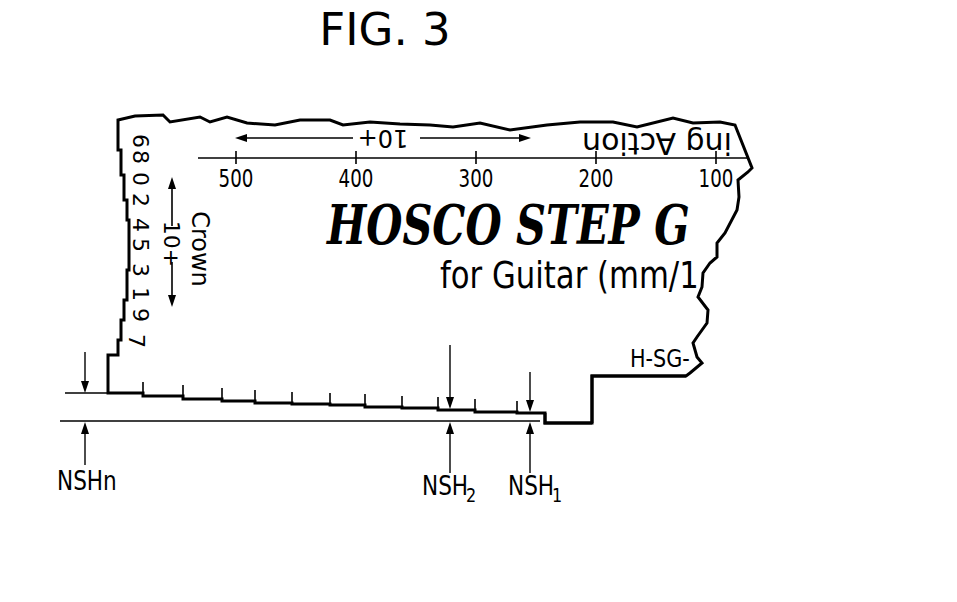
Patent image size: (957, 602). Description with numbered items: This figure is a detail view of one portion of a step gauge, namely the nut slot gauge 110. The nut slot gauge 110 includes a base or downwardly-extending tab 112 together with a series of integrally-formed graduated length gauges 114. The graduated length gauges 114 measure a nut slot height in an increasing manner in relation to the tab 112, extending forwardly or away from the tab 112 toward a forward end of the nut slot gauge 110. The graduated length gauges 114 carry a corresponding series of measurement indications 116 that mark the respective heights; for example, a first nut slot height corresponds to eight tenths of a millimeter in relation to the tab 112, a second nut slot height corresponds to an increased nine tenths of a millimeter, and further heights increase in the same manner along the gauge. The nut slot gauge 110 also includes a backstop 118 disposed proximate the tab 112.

The nut slot gauge 110 is at (232, 341).
The tab 112 is at (594, 424).
The graduated length gauges 114 is at (272, 405).
The measurement indications 116 is at (521, 364).
The backstop 118 is at (595, 383).